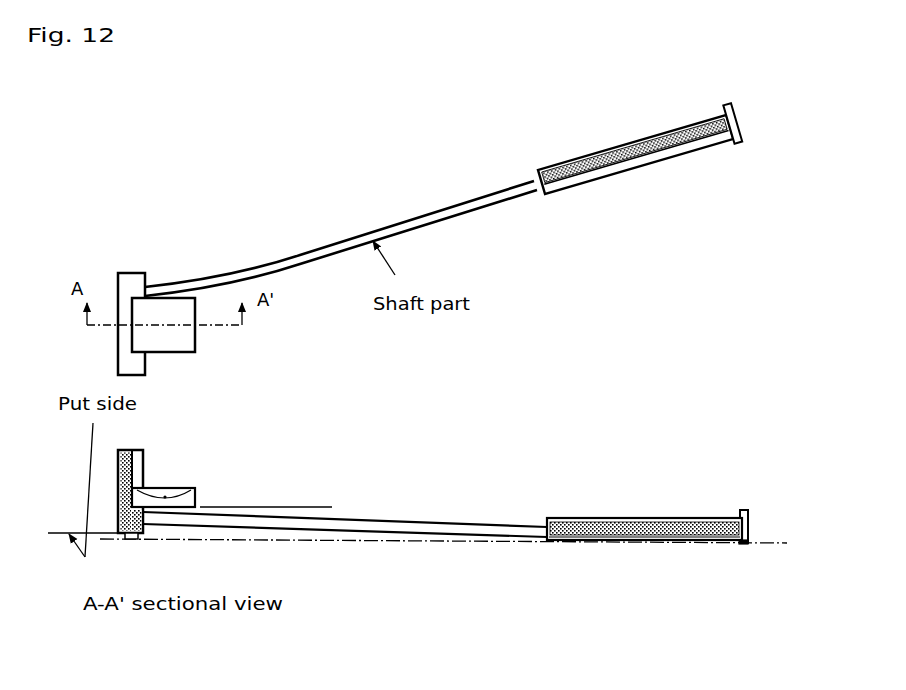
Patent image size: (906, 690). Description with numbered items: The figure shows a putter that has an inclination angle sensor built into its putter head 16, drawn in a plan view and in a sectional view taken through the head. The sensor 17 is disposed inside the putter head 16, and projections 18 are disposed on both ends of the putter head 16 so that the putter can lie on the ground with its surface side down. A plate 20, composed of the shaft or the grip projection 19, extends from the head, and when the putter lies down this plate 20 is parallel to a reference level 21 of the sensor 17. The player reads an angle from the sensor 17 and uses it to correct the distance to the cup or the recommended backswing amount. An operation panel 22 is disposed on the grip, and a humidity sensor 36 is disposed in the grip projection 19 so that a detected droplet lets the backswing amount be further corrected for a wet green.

The putter head 16 is at (139, 262).
The sensor 17 is at (250, 415).
The projections 18 is at (134, 540).
The grip projection 19 is at (740, 505).
The plate 20 is at (345, 542).
The reference level 21 is at (314, 489).
The operation panel 22 is at (614, 179).
The humidity sensor 36 is at (740, 546).